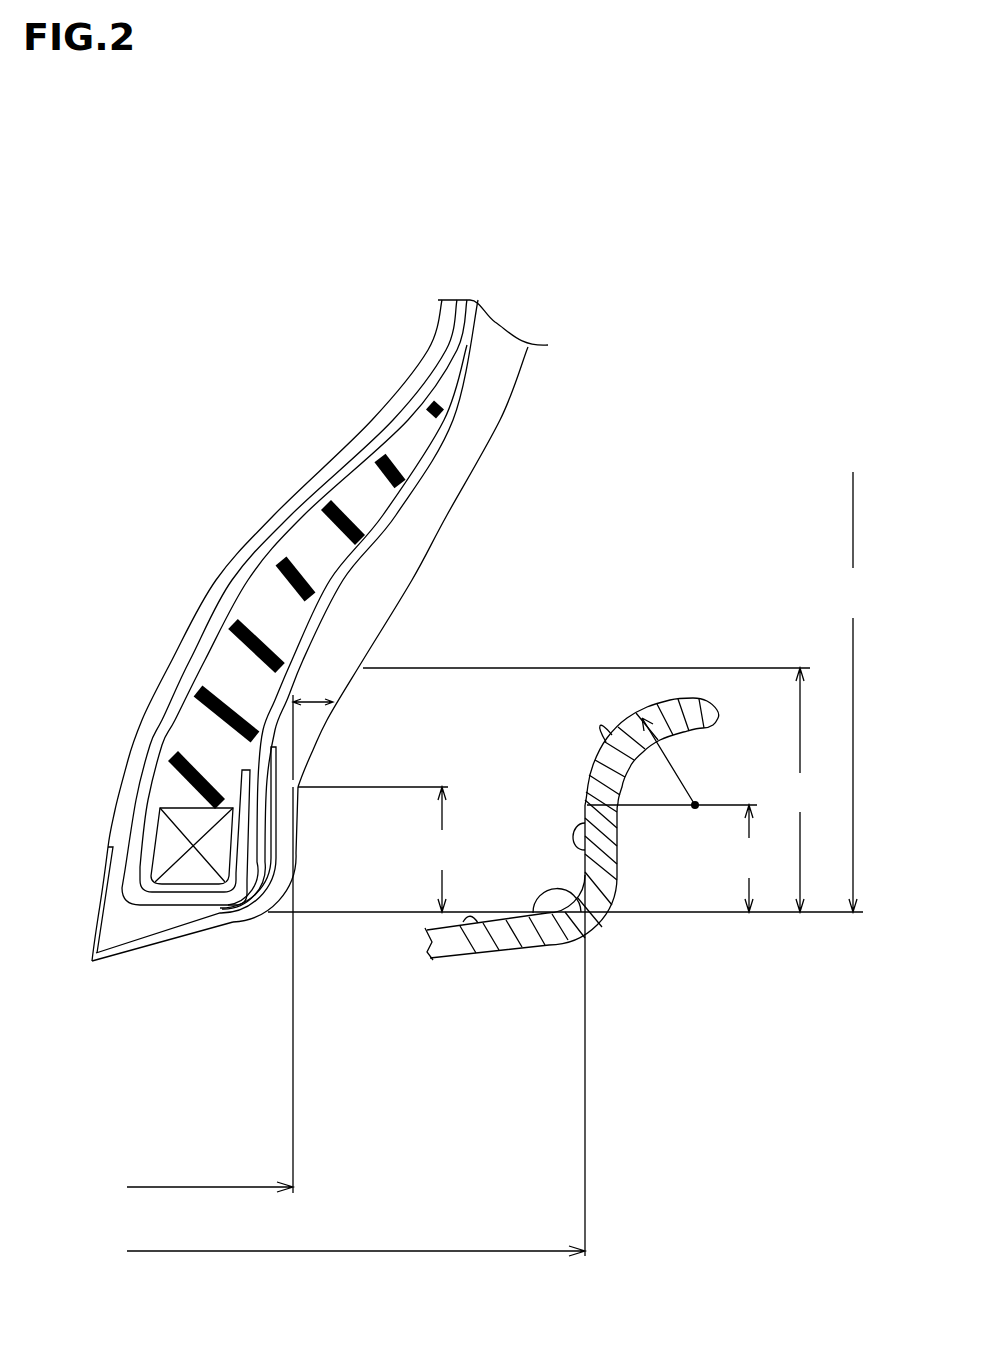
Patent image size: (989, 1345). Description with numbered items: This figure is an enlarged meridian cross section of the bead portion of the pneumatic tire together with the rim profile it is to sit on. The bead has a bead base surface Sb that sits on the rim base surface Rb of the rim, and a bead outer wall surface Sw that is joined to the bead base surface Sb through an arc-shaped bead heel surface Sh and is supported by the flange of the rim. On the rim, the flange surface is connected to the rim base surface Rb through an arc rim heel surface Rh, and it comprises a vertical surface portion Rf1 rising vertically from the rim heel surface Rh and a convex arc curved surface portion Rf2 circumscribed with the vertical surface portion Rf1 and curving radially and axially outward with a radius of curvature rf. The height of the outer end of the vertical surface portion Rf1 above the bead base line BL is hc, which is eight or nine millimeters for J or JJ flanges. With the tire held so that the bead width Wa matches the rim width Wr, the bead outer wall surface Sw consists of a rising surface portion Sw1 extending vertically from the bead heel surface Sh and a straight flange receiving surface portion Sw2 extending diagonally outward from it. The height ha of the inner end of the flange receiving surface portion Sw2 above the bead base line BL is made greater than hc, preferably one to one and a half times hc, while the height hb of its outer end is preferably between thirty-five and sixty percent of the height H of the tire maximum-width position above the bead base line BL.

The flange receiving surface portion Sw2 is at (323, 730).
The rising surface portion Sw1 is at (298, 812).
The bead outer wall surface Sw is at (488, 680).
The bead heel surface Sh is at (281, 900).
The bead base surface Sb is at (125, 958).
The rim base surface Rb is at (467, 957).
The rim heel surface Rh is at (536, 914).
The vertical surface portion Rf1 is at (614, 862).
The convex arc curved surface portion Rf2 is at (638, 758).
The radius of curvature rf is at (675, 765).
The bead base line BL is at (823, 915).
The height of radially inner end of flange receiving surface portion ha is at (379, 849).
The height of radially outer end of flange receiving surface portion hb is at (591, 790).
The height of vertical surface portion hc is at (677, 858).
The height of tire maximum-width position H is at (854, 692).
The bead width Wa is at (184, 995).
The rim width Wr is at (331, 1070).